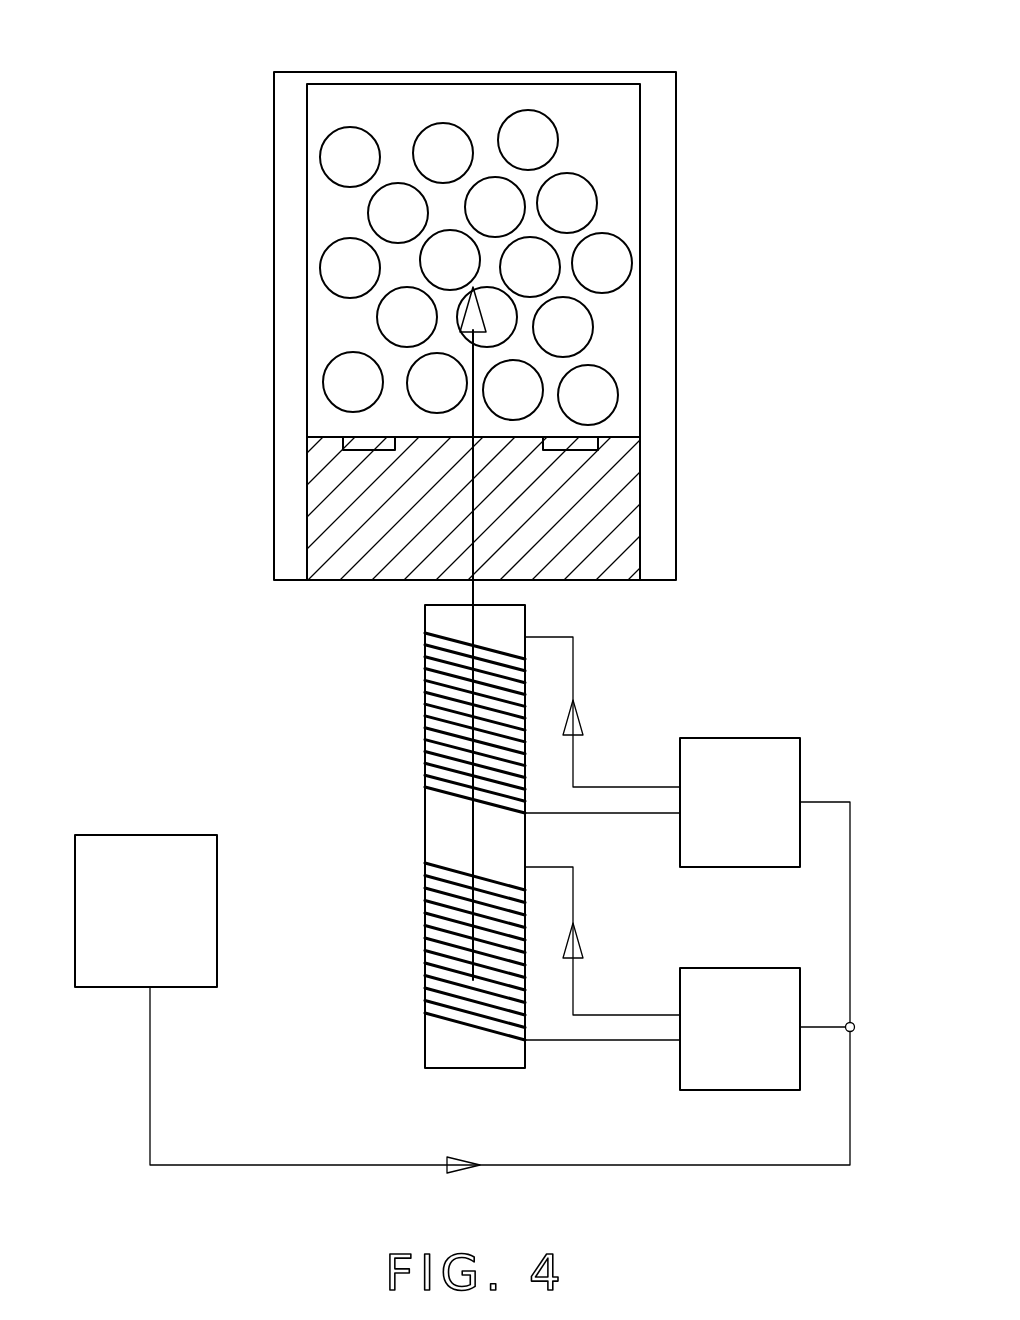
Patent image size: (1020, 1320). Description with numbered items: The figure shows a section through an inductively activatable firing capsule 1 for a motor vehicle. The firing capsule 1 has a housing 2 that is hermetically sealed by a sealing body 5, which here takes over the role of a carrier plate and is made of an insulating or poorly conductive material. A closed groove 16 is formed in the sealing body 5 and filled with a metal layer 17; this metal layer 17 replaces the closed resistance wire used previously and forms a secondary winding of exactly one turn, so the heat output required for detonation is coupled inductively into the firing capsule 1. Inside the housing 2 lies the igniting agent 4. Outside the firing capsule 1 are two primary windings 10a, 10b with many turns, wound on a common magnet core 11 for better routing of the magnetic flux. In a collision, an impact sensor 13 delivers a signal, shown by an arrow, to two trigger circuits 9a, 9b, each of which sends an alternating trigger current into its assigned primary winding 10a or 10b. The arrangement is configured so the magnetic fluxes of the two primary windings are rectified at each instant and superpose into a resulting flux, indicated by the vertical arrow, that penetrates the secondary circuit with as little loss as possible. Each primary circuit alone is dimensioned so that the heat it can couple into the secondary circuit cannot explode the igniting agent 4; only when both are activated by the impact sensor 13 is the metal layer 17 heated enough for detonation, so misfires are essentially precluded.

The firing capsule 1 is at (252, 257).
The housing 2 is at (290, 413).
The igniting agent 4 is at (568, 173).
The sealing body 5 is at (620, 517).
The closed groove 16 is at (598, 445).
The metal layer 17 is at (582, 437).
The primary winding 10a is at (425, 703).
The primary winding 10b is at (425, 927).
The magnet core 11 is at (442, 1052).
The trigger circuit 9a is at (662, 752).
The trigger circuit 9b is at (662, 978).
The impact sensor 13 is at (146, 911).